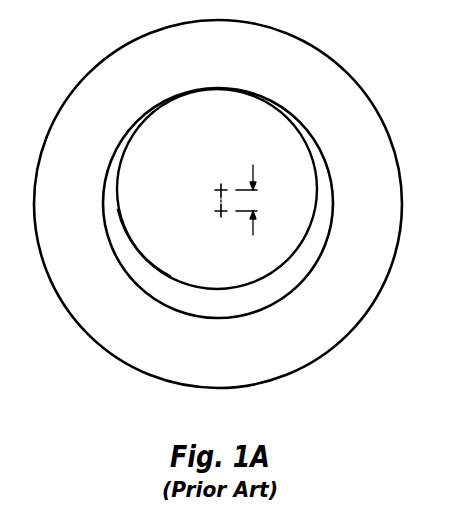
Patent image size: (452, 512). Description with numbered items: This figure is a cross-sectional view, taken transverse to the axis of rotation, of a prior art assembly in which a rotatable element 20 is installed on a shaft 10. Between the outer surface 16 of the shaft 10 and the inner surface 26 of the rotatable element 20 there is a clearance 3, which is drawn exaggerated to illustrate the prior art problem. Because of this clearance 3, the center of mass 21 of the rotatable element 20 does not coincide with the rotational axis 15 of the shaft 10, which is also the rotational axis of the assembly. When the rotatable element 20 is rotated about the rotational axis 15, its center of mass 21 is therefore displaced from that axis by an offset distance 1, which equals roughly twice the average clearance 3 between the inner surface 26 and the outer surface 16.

The shaft 10 is at (155, 153).
The rotatable element 20 is at (312, 68).
The inner surface 26 is at (319, 260).
The clearance 3 is at (261, 295).
The outer surface 16 is at (134, 252).
The rotational axis 15 is at (220, 190).
The center of mass 21 is at (220, 212).
The offset distance 1 is at (255, 200).